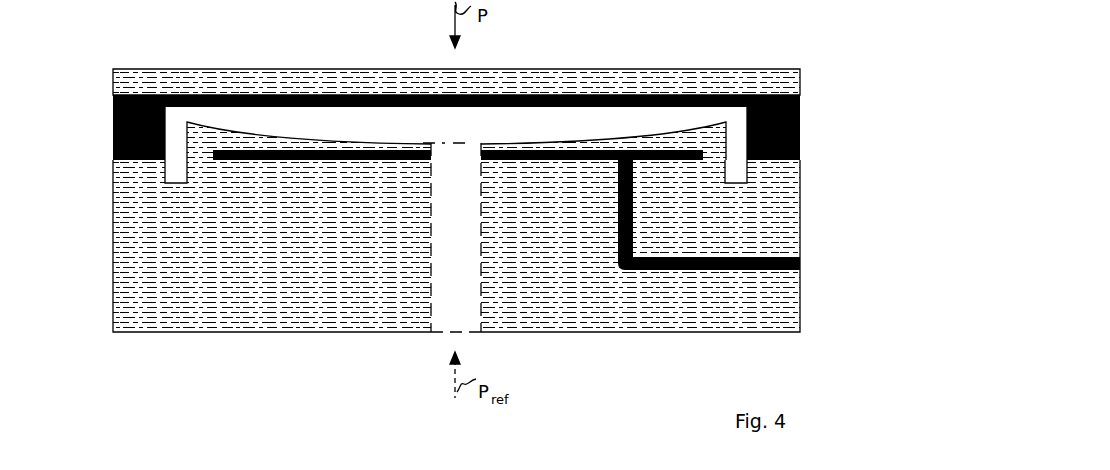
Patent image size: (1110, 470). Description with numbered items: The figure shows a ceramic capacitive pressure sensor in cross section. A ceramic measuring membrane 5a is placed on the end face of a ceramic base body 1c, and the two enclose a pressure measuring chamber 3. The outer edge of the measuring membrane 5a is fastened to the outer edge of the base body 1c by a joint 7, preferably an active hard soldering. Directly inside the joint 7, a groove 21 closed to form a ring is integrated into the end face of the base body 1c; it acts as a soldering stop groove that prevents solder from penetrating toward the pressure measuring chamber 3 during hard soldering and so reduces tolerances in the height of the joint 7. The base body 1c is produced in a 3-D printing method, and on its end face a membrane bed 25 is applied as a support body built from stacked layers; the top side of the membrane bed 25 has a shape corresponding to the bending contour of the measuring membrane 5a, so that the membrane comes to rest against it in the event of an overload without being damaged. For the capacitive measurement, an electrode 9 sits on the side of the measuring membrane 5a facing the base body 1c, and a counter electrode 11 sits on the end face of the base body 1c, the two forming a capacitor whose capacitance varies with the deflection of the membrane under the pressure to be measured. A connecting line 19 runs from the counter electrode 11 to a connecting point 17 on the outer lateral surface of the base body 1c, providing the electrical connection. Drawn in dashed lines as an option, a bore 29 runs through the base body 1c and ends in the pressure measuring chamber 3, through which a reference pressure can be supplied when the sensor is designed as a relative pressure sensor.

The measuring membrane 5a is at (203, 78).
The electrode 9 is at (317, 98).
The joint 7 is at (113, 118).
The base body 1c is at (125, 263).
The groove 21 is at (173, 173).
The membrane bed 25 is at (677, 140).
The pressure measuring chamber 3 is at (452, 133).
The counter electrode 11 is at (270, 160).
The bore 29 is at (463, 245).
The connecting point 17 is at (800, 266).
The connecting line 19 is at (660, 270).